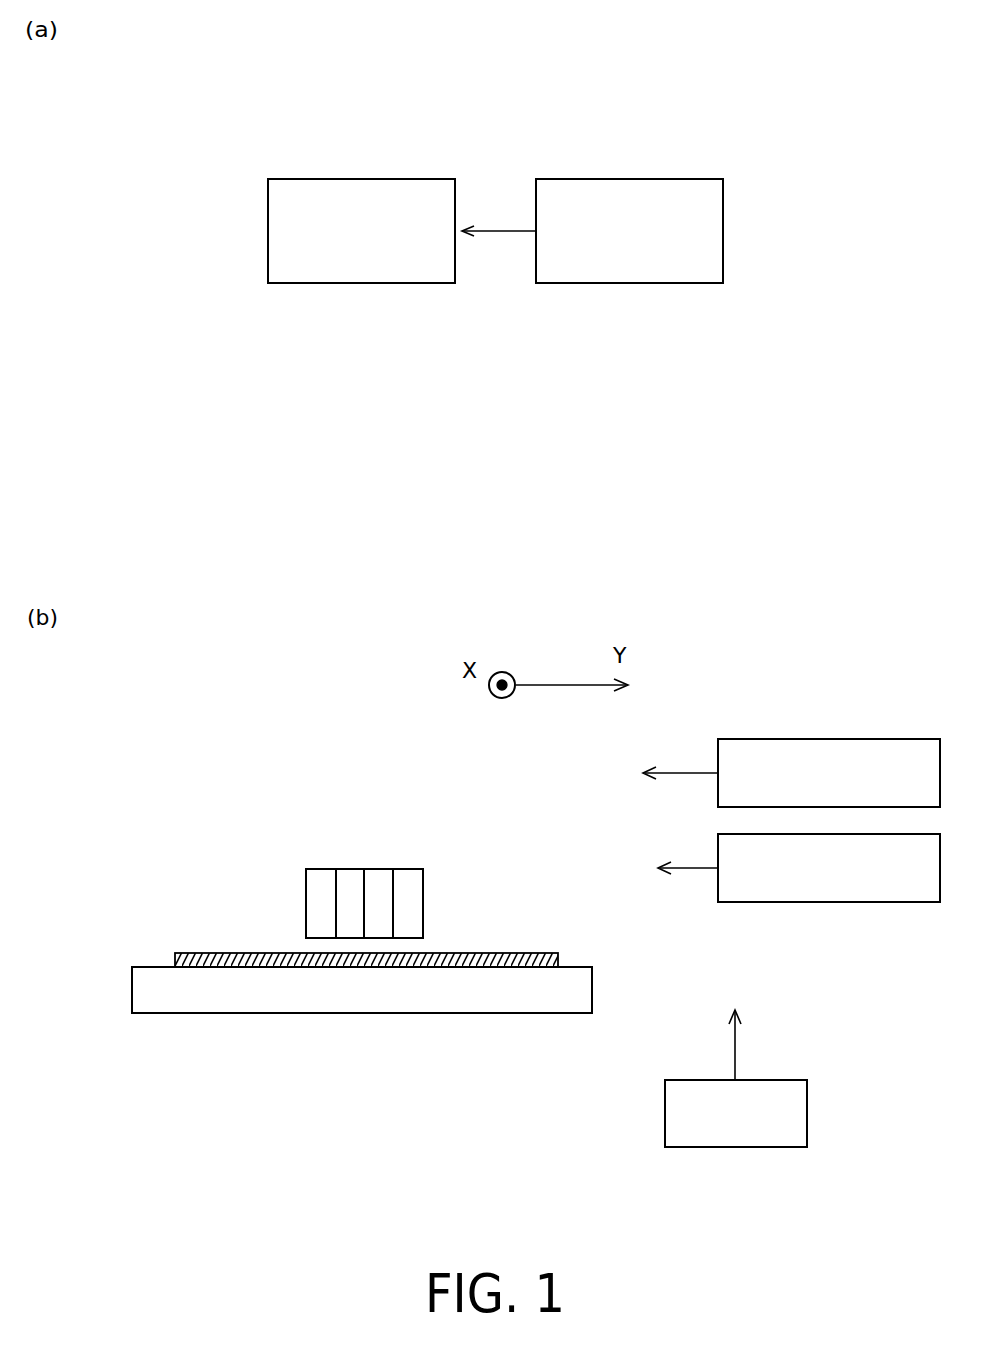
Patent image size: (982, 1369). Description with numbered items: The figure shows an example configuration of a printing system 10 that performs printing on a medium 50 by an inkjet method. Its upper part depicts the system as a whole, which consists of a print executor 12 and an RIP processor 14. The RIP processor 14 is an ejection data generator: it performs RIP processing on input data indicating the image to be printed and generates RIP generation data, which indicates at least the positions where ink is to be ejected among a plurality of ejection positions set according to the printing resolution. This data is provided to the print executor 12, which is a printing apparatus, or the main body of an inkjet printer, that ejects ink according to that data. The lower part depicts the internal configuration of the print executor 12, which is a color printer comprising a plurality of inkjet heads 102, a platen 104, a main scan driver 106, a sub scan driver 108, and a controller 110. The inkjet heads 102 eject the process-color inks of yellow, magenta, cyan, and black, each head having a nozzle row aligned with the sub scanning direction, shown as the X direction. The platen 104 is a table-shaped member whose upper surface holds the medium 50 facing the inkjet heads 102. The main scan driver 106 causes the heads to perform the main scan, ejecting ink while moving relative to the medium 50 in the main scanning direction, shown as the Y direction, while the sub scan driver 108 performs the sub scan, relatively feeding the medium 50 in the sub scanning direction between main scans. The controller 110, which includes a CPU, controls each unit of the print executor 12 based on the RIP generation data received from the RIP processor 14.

The printing system 10 is at (844, 87).
The print executor 12 is at (268, 215).
The RIP processor 14 is at (723, 212).
The medium 50 is at (178, 952).
The inkjet heads 102 is at (422, 868).
The platen 104 is at (375, 1002).
The main scan driver 106 is at (830, 739).
The sub scan driver 108 is at (870, 902).
The controller 110 is at (665, 1117).